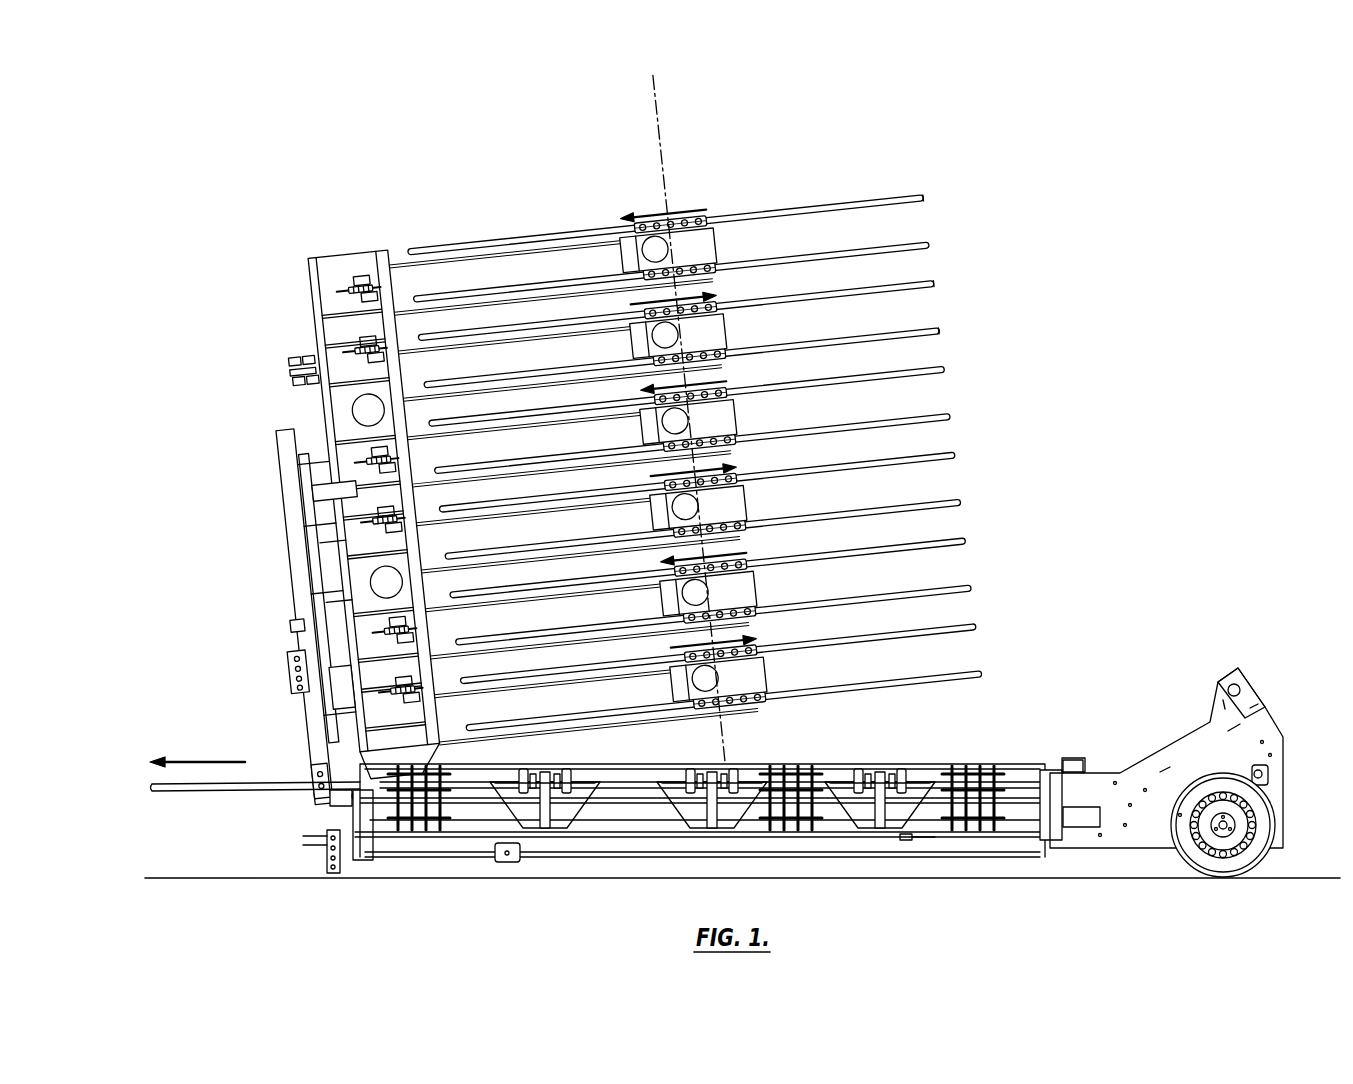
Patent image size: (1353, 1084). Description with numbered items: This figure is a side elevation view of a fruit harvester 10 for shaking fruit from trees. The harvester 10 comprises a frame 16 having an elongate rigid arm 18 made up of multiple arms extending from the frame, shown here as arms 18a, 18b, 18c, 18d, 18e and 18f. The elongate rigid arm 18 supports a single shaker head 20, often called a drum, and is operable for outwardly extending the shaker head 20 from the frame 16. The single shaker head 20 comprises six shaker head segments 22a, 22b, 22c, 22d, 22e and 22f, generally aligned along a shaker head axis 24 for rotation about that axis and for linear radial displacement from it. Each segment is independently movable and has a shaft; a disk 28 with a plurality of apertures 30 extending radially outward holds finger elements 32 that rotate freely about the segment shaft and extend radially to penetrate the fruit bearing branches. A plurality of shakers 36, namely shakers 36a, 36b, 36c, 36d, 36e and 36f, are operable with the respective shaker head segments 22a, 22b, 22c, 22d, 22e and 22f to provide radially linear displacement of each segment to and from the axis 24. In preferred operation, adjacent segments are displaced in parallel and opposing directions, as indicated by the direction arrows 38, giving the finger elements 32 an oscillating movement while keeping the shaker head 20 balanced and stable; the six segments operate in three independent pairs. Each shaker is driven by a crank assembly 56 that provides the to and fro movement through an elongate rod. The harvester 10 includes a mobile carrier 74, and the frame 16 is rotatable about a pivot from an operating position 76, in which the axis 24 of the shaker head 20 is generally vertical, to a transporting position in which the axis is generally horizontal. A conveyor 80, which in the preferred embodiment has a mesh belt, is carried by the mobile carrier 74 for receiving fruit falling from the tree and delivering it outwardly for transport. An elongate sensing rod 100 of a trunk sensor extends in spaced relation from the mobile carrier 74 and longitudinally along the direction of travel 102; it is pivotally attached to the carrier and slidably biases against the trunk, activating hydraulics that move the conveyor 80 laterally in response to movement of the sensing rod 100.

The fruit harvester 10 is at (742, 476).
The frame 16 is at (325, 528).
The elongate rigid arm 18 is at (692, 437).
The arm 18a is at (519, 278).
The arm 18b is at (529, 363).
The arm 18c is at (542, 450).
The arm 18d is at (562, 533).
The arm 18e is at (574, 618).
The arm 18f is at (585, 703).
The single shaker head 20 is at (705, 418).
The shaker head segment 22a is at (607, 262).
The shaker head segment 22b is at (612, 350).
The shaker head segment 22c is at (632, 432).
The shaker head segment 22d is at (636, 518).
The shaker head segment 22e is at (648, 602).
The shaker head segment 22f is at (627, 690).
The shaker head axis 24 is at (656, 113).
The disk 28 is at (646, 192).
The apertures 30 is at (728, 530).
The finger elements 32 is at (952, 333).
The shakers 36 is at (717, 427).
The shaker 36a is at (713, 247).
The shaker 36b is at (710, 332).
The shaker 36c is at (725, 421).
The shaker 36d is at (733, 502).
The shaker 36e is at (738, 592).
The shaker 36f is at (748, 677).
The direction arrows 38 is at (687, 288).
The crank assembly 56 is at (343, 364).
The mobile carrier 74 is at (1130, 750).
The operating position 76 is at (342, 800).
The conveyor 80 is at (985, 760).
The elongate sensing rod 100 is at (228, 793).
The direction of travel 102 is at (190, 760).